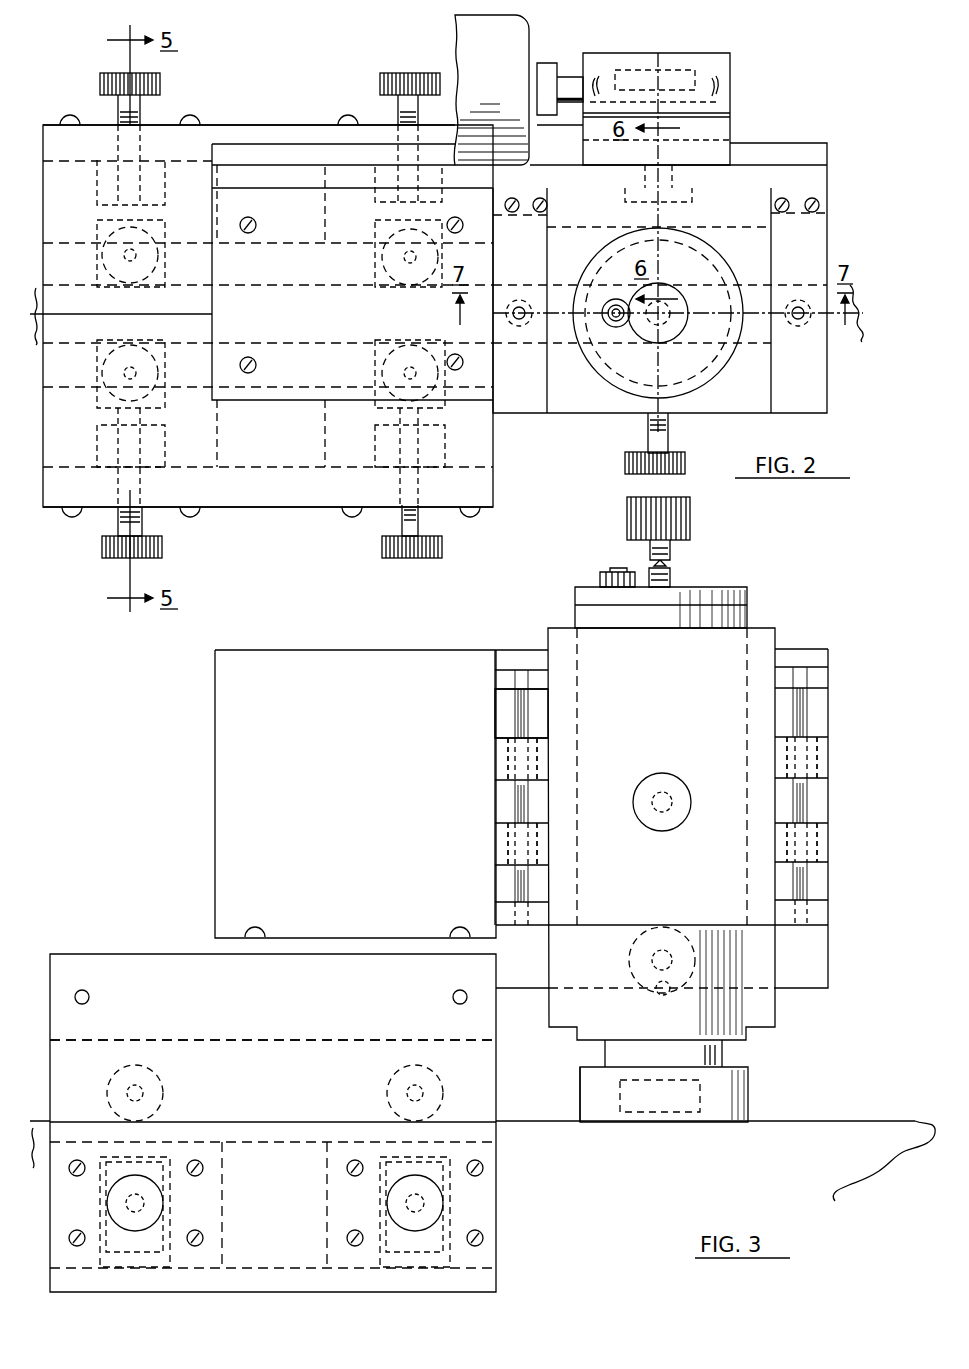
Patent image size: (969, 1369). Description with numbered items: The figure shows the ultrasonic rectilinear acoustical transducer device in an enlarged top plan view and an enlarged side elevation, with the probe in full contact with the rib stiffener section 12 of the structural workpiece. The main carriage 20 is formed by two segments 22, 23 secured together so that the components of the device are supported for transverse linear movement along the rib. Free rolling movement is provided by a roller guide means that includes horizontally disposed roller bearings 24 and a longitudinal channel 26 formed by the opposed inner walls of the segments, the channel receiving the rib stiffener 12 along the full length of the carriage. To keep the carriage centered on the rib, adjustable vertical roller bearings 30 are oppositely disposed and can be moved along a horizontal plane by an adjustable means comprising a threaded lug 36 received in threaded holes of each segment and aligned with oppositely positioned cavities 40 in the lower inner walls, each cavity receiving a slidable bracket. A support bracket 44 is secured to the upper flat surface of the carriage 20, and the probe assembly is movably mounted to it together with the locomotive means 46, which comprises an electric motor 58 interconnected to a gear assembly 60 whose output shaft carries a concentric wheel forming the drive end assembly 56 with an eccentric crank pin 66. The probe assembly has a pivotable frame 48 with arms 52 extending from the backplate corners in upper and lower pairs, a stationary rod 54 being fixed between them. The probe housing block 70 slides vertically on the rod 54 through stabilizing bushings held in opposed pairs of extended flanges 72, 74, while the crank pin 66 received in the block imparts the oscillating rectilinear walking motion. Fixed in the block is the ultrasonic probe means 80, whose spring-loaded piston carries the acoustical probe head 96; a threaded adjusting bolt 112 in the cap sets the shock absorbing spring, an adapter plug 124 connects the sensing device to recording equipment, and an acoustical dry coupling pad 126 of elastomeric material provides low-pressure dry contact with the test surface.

In FIG. 2, the rib stiffener section 12 is at (855, 344).
In FIG. 3, the rib stiffener section 12 is at (905, 1122).
In FIG. 2, the main carriage 20 is at (518, 478).
In FIG. 3, the main carriage 20 is at (108, 930).
In FIG. 2, the carriage segment 22 is at (262, 128).
In FIG. 2, the carriage segment 23 is at (100, 498).
In FIG. 3, the carriage segment 23 is at (182, 968).
In FIG. 3, the roller bearings 24 is at (164, 1094).
In FIG. 3, the longitudinal channel 26 is at (232, 1040).
In FIG. 2, the adjustable vertical roller bearings 30 is at (100, 264).
In FIG. 3, the adjustable vertical roller bearings 30 is at (142, 1244).
In FIG. 2, the threaded lug 36 is at (158, 84).
In FIG. 3, the threaded lug 36 is at (153, 1211).
In FIG. 2, the cavities 40 is at (158, 155).
In FIG. 3, the cavities 40 is at (100, 1211).
In FIG. 2, the support bracket 44 is at (304, 160).
In FIG. 3, the support bracket 44 is at (381, 794).
In FIG. 2, the locomotive means 46 is at (604, 40).
In FIG. 3, the pivotable frame 48 is at (500, 722).
In FIG. 2, the arm 52 is at (532, 256).
In FIG. 3, the arm 52 is at (504, 672).
In FIG. 3, the stationary rod 54 is at (524, 712).
In FIG. 3, the drive end assembly 56 is at (632, 936).
In FIG. 2, the electric motor 58 is at (520, 36).
In FIG. 2, the gear assembly 60 is at (730, 114).
In FIG. 3, the eccentric crank pin 66 is at (658, 990).
In FIG. 2, the probe housing block 70 is at (733, 412).
In FIG. 3, the probe housing block 70 is at (773, 640).
In FIG. 3, the extended flanges 72 is at (522, 840).
In FIG. 3, the extended flanges 74 is at (823, 843).
In FIG. 2, the ultrasonic probe means 80 is at (610, 404).
In FIG. 3, the ultrasonic probe means 80 is at (760, 592).
In FIG. 3, the acoustical probe head 96 is at (574, 1122).
In FIG. 2, the threaded adjusting bolt 112 is at (662, 330).
In FIG. 3, the threaded adjusting bolt 112 is at (670, 549).
In FIG. 2, the adapter plug 124 is at (616, 328).
In FIG. 3, the adapter plug 124 is at (600, 580).
In FIG. 3, the acoustical dry coupling pad 126 is at (740, 1090).